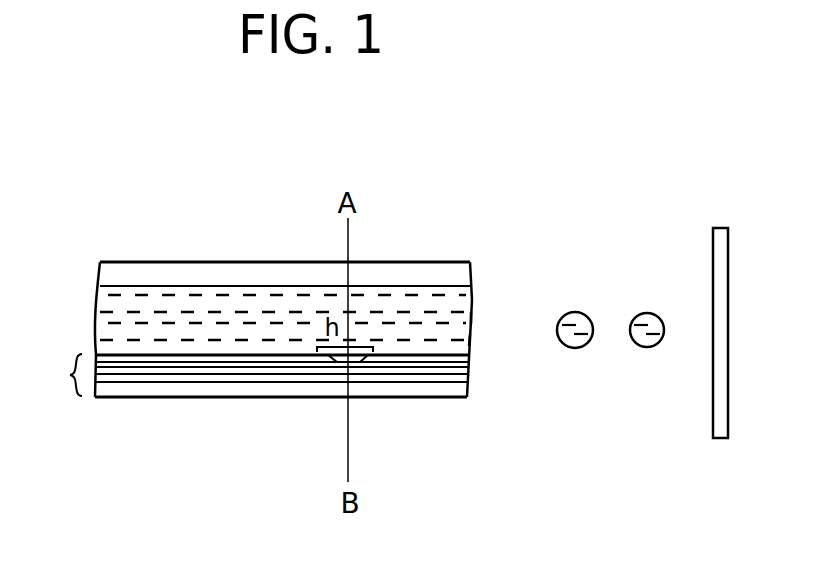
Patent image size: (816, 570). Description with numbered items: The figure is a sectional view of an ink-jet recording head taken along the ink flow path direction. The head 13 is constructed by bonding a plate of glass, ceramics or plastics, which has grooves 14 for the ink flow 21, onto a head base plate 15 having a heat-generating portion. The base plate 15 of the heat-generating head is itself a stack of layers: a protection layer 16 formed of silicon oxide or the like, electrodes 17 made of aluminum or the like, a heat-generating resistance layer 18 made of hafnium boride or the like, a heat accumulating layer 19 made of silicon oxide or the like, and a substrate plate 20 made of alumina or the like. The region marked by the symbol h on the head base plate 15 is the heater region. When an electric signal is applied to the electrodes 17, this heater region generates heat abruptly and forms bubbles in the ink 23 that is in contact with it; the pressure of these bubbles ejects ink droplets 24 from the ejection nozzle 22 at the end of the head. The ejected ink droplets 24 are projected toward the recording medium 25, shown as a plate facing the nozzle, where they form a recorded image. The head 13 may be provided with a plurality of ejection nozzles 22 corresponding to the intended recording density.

The head 13 is at (227, 262).
The grooves 14 is at (290, 286).
The head base plate 15 is at (54, 375).
The protection layer 16 is at (118, 356).
The electrodes 17 is at (155, 361).
The heat-generating resistance layer 18 is at (237, 374).
The heat accumulating layer 19 is at (297, 382).
The substrate plate 20 is at (390, 398).
The ink flow 21 is at (150, 290).
The ejection nozzle 22 is at (470, 340).
The ink 23 is at (471, 318).
The ink droplets 24 is at (552, 305).
The recording medium 25 is at (713, 258).